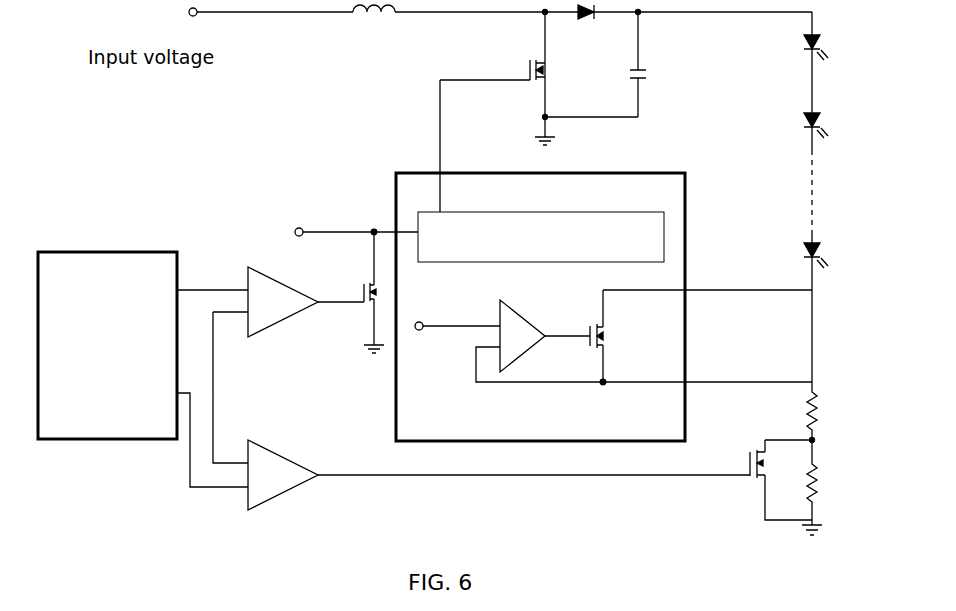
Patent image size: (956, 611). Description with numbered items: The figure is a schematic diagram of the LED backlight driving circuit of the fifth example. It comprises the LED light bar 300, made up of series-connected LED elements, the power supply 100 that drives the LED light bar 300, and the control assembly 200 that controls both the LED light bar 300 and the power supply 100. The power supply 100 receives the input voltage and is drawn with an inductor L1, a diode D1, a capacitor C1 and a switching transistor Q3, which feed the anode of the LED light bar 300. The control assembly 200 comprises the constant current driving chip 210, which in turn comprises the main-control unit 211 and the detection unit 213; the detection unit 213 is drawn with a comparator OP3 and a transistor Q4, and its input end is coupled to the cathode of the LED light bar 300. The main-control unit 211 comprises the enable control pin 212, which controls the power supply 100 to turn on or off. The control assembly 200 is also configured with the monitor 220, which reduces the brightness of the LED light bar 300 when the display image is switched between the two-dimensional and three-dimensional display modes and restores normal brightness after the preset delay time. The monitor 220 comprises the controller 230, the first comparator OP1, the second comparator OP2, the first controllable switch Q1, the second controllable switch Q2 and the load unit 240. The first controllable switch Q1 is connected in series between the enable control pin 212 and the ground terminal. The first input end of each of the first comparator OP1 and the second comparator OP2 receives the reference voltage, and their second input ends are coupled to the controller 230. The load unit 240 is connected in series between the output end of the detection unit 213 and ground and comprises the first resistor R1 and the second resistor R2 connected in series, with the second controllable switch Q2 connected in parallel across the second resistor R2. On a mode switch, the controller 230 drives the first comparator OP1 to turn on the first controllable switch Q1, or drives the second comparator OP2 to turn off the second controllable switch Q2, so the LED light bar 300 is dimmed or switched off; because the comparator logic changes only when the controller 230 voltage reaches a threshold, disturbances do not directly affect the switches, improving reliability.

The power supply 100 is at (418, 58).
The control assembly 200 is at (220, 210).
The constant current driving chip 210 is at (549, 204).
The main-control unit 211 is at (549, 247).
The enable control pin 212 is at (380, 222).
The detection unit 213 is at (475, 386).
The monitor 220 is at (160, 470).
The controller 230 is at (120, 363).
The load unit 240 is at (797, 495).
The LED light bar 300 is at (780, 200).
The inductor L1 is at (374, 20).
The diode D1 is at (586, 24).
The capacitor C1 is at (648, 64).
The first controllable switch Q1 is at (351, 292).
The second controllable switch Q2 is at (762, 480).
The transistor Q3 is at (492, 112).
The transistor Q4 is at (682, 337).
The first comparator OP1 is at (283, 297).
The second comparator OP2 is at (283, 471).
The operational amplifier OP3 is at (531, 337).
The first resistor R1 is at (822, 411).
The second resistor R2 is at (822, 482).
The light emitting diode LED is at (792, 151).